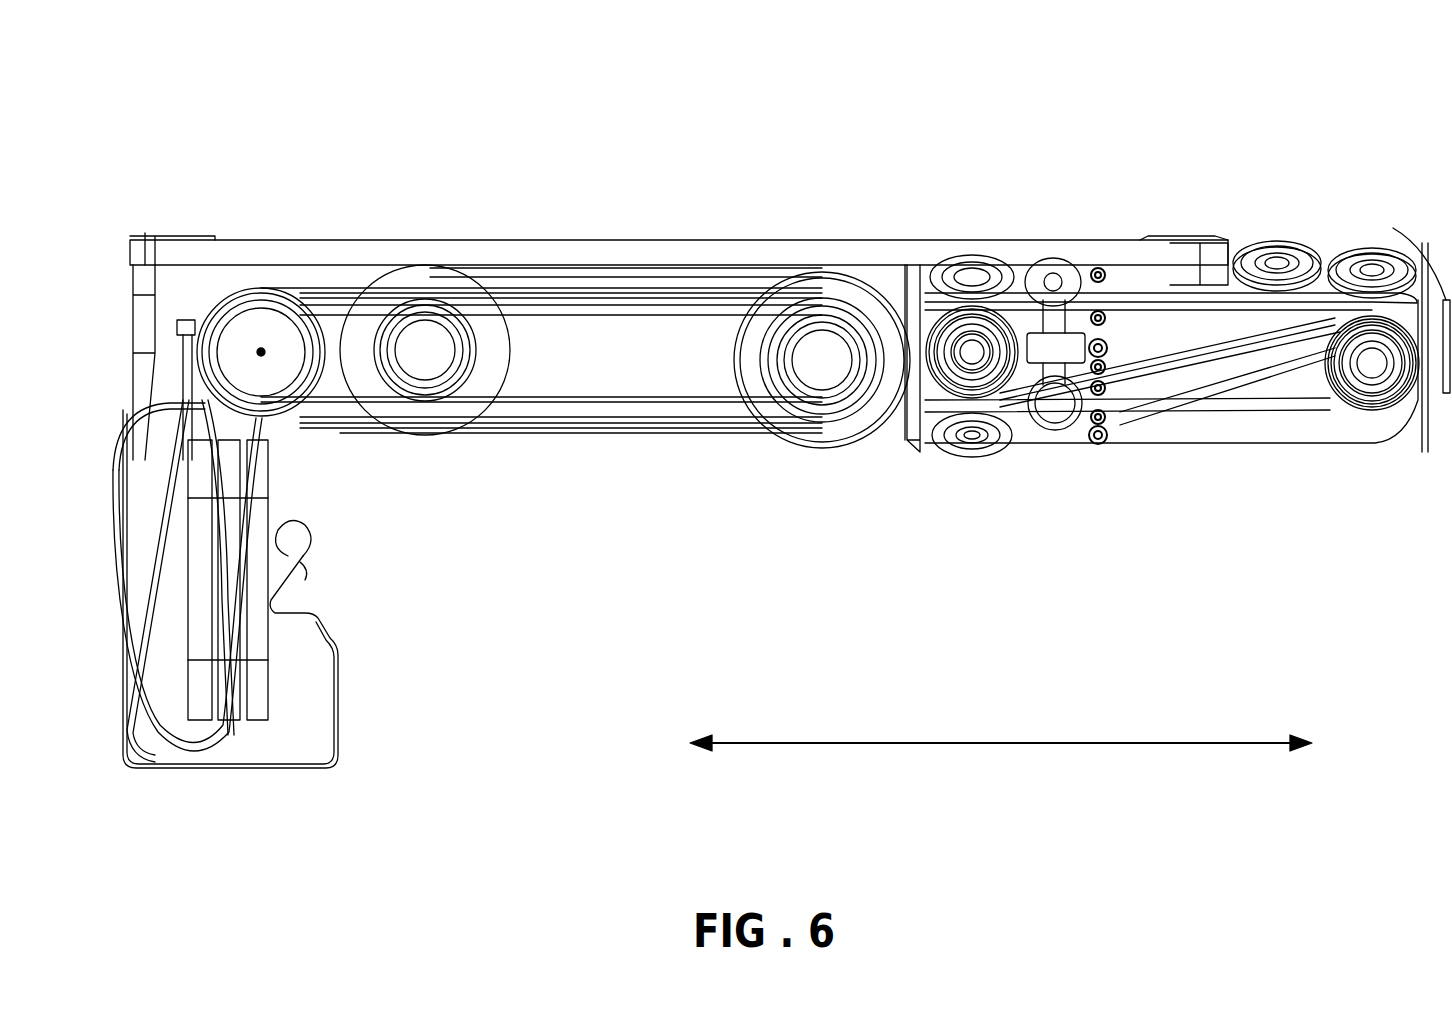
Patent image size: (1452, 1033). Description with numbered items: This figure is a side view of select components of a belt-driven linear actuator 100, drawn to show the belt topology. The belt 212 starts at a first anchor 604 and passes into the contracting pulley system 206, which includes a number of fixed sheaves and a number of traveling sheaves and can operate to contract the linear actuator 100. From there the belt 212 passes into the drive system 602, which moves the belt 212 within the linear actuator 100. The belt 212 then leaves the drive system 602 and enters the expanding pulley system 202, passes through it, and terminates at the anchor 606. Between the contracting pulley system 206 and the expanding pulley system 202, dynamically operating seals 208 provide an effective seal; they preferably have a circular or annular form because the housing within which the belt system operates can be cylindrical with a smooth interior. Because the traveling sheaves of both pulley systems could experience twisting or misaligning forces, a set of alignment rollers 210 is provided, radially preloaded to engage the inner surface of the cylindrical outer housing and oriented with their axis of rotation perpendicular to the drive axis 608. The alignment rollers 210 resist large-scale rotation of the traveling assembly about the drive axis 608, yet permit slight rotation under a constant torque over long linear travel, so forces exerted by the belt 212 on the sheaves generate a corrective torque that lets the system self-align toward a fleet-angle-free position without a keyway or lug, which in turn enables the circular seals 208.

The linear actuator 100 is at (283, 139).
The anchor 606 is at (172, 258).
The contracting pulley system 206 is at (355, 235).
The belt 212 is at (690, 437).
The drive system 602 is at (405, 609).
The first anchor 604 is at (310, 548).
The expanding pulley system 202 is at (933, 517).
The seals 208 is at (1430, 265).
The alignment rollers 210 is at (1060, 345).
The drive axis 608 is at (1001, 777).